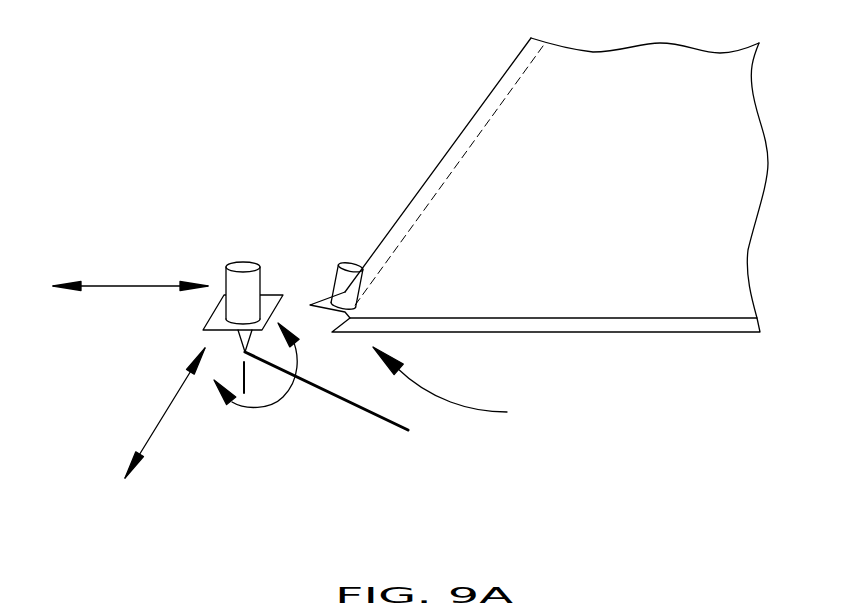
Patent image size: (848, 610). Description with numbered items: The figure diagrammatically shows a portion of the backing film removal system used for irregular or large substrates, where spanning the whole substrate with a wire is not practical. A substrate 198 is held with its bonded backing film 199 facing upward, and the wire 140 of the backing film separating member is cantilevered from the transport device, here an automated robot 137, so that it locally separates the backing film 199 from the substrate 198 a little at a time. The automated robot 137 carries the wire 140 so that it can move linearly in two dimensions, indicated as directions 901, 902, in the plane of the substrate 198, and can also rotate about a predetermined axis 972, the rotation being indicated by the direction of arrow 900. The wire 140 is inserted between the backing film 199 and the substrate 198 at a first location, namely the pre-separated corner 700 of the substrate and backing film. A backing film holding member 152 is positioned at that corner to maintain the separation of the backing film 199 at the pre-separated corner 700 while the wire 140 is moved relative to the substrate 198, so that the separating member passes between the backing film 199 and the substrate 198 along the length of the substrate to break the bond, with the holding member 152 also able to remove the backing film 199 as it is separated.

The automated robot 137 is at (245, 265).
The wire 140 is at (357, 407).
The backing film holding member 152 is at (356, 267).
The substrate 198 is at (582, 332).
The backing film 199 is at (502, 75).
The pre-separated corner 700 is at (464, 385).
The direction of arrow (rotation) 900 is at (278, 400).
The direction (first linear direction) 901 is at (132, 285).
The direction (second linear direction) 902 is at (173, 398).
The predetermined axis 972 is at (242, 372).